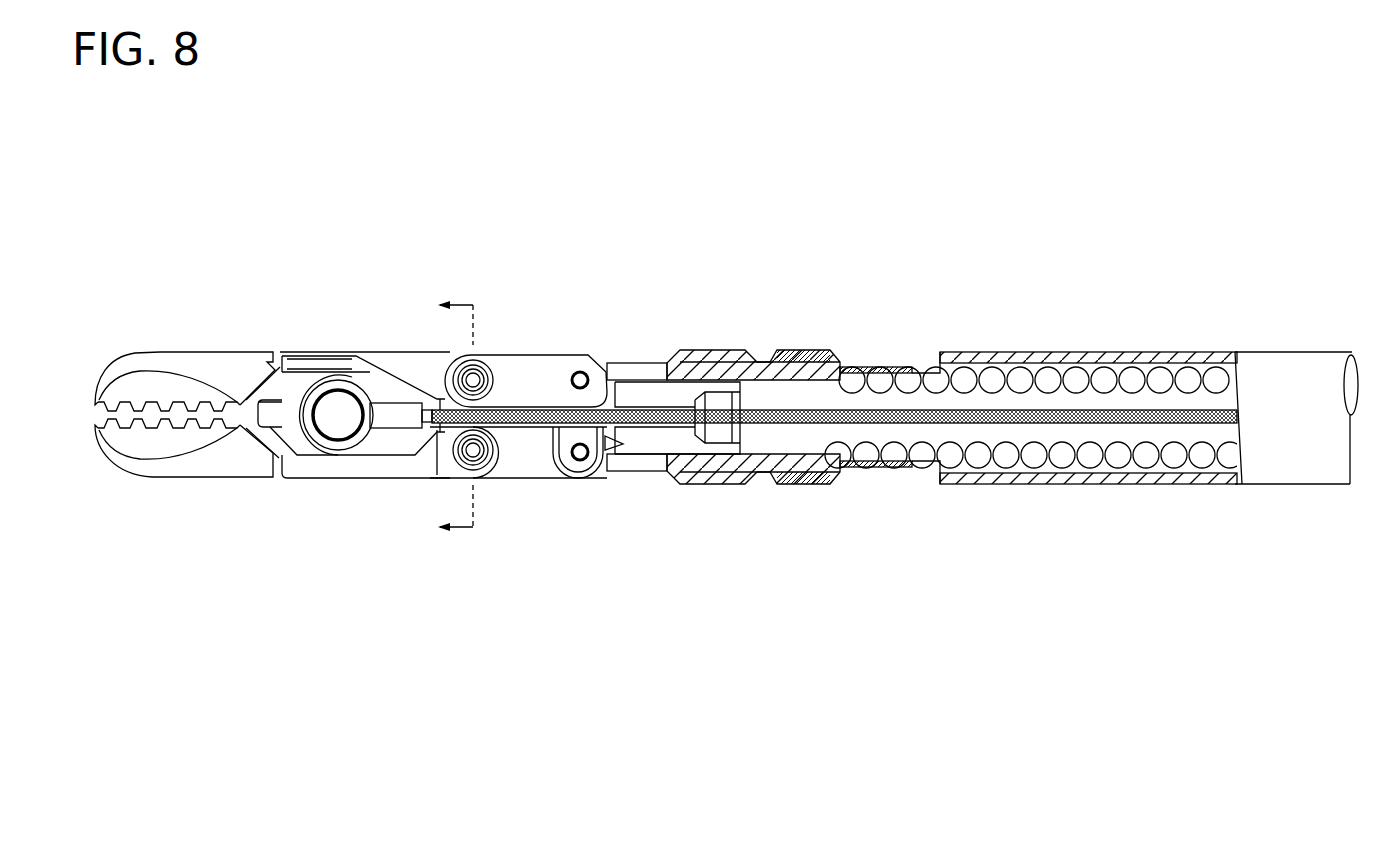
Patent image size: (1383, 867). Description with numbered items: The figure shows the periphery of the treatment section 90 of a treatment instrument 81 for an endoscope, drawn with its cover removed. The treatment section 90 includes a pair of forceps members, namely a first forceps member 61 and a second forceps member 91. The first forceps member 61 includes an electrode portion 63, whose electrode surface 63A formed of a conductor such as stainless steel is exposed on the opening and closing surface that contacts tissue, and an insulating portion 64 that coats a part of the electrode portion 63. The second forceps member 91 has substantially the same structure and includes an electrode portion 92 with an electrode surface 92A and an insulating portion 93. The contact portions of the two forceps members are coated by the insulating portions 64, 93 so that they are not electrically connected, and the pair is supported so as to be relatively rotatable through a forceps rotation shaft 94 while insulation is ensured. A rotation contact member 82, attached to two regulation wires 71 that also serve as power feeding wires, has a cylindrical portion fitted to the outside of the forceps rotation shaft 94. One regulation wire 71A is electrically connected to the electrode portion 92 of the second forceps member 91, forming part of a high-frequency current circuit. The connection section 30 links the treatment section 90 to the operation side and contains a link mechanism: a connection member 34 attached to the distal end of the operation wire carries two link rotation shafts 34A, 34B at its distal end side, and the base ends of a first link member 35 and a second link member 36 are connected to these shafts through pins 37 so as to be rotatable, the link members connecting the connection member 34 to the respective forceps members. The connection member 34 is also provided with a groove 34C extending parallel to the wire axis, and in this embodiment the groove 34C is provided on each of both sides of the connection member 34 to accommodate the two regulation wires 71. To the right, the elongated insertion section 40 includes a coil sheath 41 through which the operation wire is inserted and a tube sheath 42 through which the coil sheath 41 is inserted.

The treatment instrument 81 is at (976, 191).
The insertion section 40 is at (1223, 298).
The coil sheath 41 is at (1035, 462).
The tube sheath 42 is at (1100, 485).
The connection section 30 is at (600, 330).
The connection member 34 is at (640, 440).
The link rotation shaft 34A is at (578, 372).
The link rotation shaft 34B is at (583, 462).
The groove 34C is at (680, 425).
The first link member 35 is at (520, 365).
The second link member 36 is at (538, 468).
The pin 37 is at (591, 426).
The treatment section 90 is at (378, 313).
The second forceps member 91 is at (210, 322).
The electrode portion 92 is at (134, 388).
The electrode surface 92A is at (160, 405).
The insulating portion 93 is at (239, 367).
The forceps rotation shaft 94 is at (332, 427).
The rotation contact member 82 is at (400, 425).
The first forceps member 61 is at (192, 502).
The electrode portion 63 is at (115, 440).
The electrode surface 63A is at (160, 427).
The insulating portion 64 is at (232, 462).
The regulation wire 71 is at (834, 501).
The regulation wire 71A is at (895, 424).